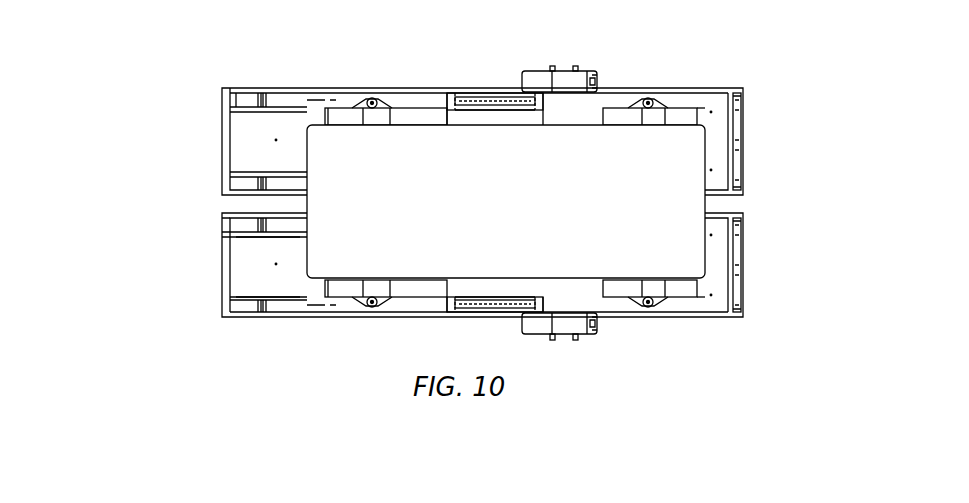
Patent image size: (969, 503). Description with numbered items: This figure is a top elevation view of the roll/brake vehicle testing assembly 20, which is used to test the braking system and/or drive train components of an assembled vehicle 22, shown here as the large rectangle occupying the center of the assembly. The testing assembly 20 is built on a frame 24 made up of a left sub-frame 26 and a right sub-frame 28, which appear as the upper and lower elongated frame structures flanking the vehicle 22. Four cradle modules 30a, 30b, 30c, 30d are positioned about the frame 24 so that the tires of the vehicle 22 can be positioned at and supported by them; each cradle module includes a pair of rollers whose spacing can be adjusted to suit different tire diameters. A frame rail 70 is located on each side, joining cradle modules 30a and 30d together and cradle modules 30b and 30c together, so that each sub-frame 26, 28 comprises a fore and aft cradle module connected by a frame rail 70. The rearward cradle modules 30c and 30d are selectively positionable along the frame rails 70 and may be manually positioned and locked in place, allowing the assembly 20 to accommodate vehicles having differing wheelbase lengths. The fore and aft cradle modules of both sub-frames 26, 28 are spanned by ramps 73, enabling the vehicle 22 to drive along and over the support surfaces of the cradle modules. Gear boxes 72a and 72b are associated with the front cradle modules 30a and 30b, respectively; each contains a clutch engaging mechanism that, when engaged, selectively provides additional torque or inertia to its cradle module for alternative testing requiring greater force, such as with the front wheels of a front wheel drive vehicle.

The roll/brake vehicle testing assembly 20 is at (134, 133).
The assembled vehicle 22 is at (497, 196).
The frame 24 is at (220, 298).
The left sub-frame 26 is at (743, 142).
The right sub-frame 28 is at (745, 262).
The cradle module 30a is at (703, 297).
The cradle module 30b is at (703, 108).
The cradle module 30c is at (347, 110).
The cradle module 30d is at (345, 297).
The frame rail 70 is at (512, 115).
The gear box 72a is at (572, 336).
The gear box 72b is at (563, 71).
The ramp 73 is at (507, 95).